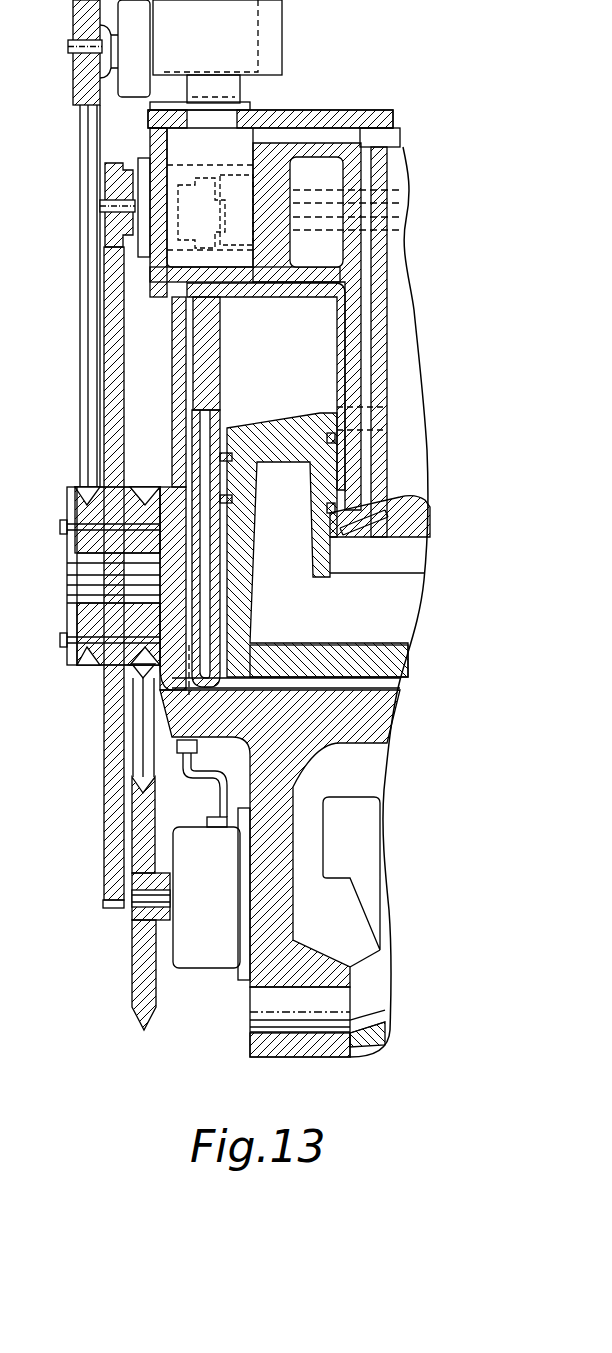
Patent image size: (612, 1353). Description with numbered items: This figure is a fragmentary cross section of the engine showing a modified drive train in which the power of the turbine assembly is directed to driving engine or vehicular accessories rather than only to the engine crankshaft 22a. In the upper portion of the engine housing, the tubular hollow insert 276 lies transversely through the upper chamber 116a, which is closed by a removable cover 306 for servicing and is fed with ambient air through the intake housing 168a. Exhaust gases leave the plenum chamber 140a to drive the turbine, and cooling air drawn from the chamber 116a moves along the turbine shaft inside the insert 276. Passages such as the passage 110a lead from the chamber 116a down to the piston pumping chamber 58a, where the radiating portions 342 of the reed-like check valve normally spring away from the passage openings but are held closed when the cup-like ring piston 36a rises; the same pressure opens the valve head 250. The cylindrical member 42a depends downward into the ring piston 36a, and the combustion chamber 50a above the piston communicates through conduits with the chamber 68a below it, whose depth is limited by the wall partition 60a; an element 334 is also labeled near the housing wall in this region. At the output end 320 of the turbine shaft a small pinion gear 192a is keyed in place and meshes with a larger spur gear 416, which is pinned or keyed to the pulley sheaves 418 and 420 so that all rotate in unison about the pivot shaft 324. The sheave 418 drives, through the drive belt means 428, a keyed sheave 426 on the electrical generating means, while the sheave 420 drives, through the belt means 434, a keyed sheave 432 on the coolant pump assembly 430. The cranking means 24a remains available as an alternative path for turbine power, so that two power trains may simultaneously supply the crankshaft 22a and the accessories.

The keyed sheave 426 is at (73, 33).
The housing 168a is at (285, 33).
The removable cover 306 is at (286, 110).
The hollow insert 276 is at (312, 183).
The passage 110a is at (366, 152).
The chamber 116a is at (390, 137).
The pinion gear 192a is at (105, 183).
The output end of power turbine shaft 320 is at (118, 216).
The plenum chamber 140a is at (323, 258).
The drive belt means 428 is at (80, 320).
The spur gear 416 is at (103, 351).
The sleeve 334 is at (190, 331).
The combustion chamber 50a is at (247, 378).
The cylindrical member 42a is at (330, 373).
The valve head 250 is at (417, 507).
The shaft 324 is at (76, 553).
The ring piston 36a is at (250, 620).
The radiating portions of reed-like check valve 342 is at (353, 560).
The piston pumping chamber 58a is at (400, 622).
The chamber 68a is at (400, 680).
The pulley sheave 418 is at (73, 663).
The wall partition 60a is at (363, 723).
The pulley sheave 420 is at (133, 678).
The belt means 434 is at (137, 760).
The cranking means 24a is at (320, 855).
The keyed sheave 432 is at (130, 952).
The coolant pump assembly 430 is at (200, 968).
The engine crankshaft 22a is at (277, 1037).